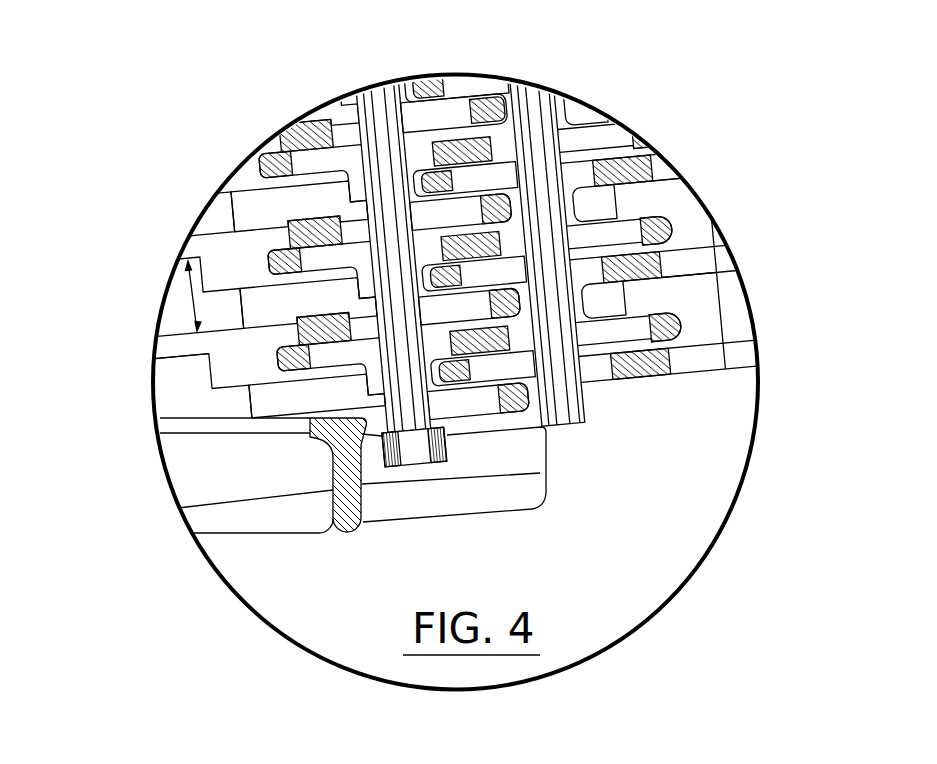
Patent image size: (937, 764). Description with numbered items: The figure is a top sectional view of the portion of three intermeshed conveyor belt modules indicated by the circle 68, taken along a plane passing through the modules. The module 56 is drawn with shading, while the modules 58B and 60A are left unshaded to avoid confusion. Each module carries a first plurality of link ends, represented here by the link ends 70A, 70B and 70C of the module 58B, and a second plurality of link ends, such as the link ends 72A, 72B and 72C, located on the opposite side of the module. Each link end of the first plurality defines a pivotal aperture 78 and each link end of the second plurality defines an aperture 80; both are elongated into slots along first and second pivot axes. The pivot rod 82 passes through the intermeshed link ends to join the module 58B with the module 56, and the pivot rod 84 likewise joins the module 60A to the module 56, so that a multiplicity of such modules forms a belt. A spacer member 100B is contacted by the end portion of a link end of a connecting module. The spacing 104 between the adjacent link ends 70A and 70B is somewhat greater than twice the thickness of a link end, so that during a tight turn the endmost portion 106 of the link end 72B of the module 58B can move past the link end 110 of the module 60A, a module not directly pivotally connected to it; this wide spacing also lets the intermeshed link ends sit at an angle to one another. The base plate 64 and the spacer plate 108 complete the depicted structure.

The module 56 is at (607, 330).
The module 58B is at (193, 443).
The module 60A is at (717, 363).
The base plate 64 is at (277, 520).
The circle 68 is at (685, 598).
The link end 70A is at (175, 343).
The link end 70B is at (193, 250).
The link end 70C is at (284, 135).
The link end 72A is at (503, 300).
The link end 72B is at (467, 213).
The link end 72C is at (458, 117).
The pivotal aperture 78 is at (275, 401).
The aperture 80 is at (490, 318).
The pivot rod 82 is at (413, 453).
The pivot rod 84 is at (560, 428).
The spacer member 100B is at (237, 407).
The spacing between adjacent link ends 104 is at (185, 297).
The endmost portion 106 is at (510, 205).
The spacer plate 108 is at (283, 277).
The link end 110 is at (431, 163).